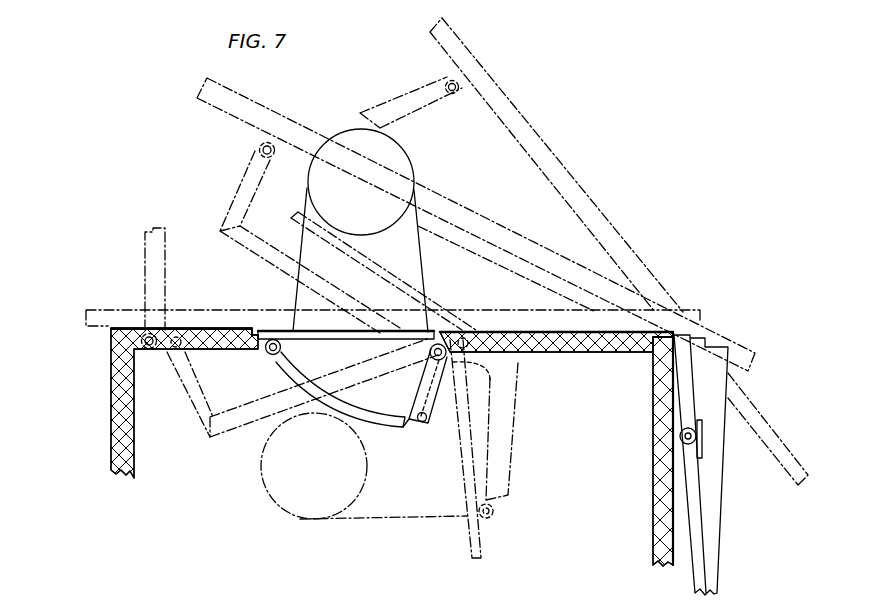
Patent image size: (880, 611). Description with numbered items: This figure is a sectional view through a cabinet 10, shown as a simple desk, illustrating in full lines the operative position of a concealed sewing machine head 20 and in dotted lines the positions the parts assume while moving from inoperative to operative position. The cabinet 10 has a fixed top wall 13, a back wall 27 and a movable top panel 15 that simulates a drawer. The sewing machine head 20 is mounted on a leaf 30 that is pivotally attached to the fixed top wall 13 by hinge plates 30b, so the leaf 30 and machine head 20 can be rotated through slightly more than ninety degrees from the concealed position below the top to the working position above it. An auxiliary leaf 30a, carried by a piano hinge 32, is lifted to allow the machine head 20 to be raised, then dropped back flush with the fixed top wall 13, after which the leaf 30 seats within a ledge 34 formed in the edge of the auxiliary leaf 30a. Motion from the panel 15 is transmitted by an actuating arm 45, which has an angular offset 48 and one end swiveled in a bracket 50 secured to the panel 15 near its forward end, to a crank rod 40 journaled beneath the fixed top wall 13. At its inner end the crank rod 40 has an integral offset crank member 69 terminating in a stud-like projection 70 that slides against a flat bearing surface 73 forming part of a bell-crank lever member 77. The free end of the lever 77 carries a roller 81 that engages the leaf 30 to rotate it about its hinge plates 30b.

The cabinet 10 is at (102, 394).
The fixed top wall 13 is at (548, 332).
The movable top panel 15 is at (515, 109).
The sewing machine head 20 is at (345, 128).
The back wall 27 is at (655, 533).
The leaf 30 is at (358, 336).
The auxiliary leaf 30a is at (202, 330).
The hinge plates 30b is at (466, 330).
The piano hinge 32 is at (148, 337).
The ledge 34 is at (263, 330).
The crank rod 40 is at (443, 362).
The actuating arm 45 is at (242, 422).
The angular offset 48 is at (178, 378).
The bracket 50 is at (258, 152).
The offset crank member 69 is at (430, 408).
The stud-like projection 70 is at (427, 427).
The flat bearing surface 73 is at (412, 428).
The bell-crank lever member 77 is at (297, 382).
The roller 81 is at (269, 355).